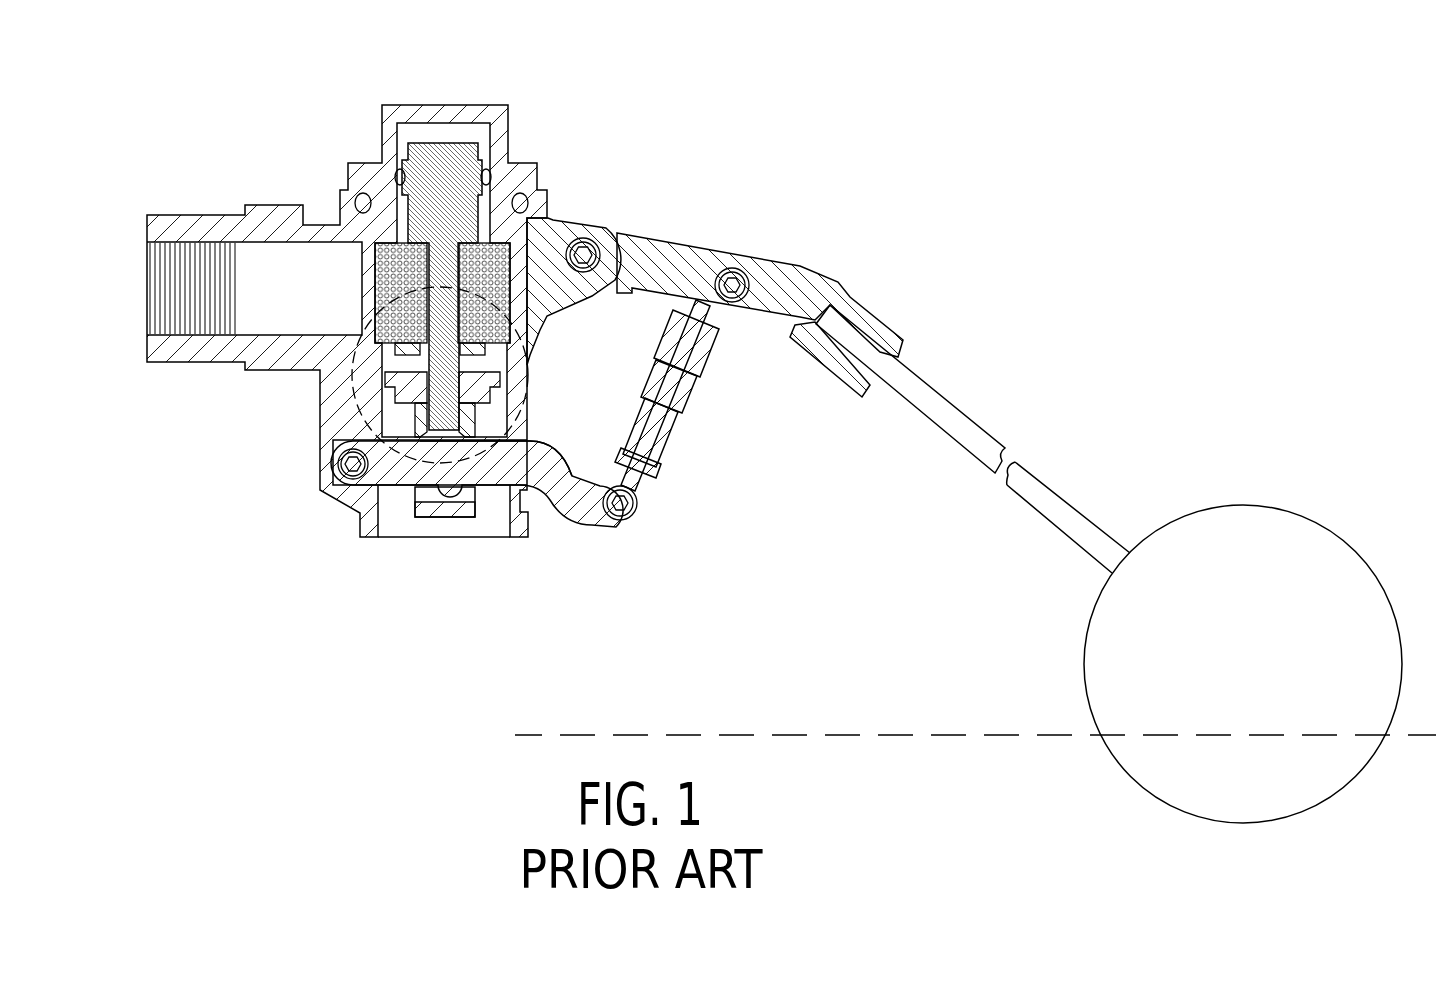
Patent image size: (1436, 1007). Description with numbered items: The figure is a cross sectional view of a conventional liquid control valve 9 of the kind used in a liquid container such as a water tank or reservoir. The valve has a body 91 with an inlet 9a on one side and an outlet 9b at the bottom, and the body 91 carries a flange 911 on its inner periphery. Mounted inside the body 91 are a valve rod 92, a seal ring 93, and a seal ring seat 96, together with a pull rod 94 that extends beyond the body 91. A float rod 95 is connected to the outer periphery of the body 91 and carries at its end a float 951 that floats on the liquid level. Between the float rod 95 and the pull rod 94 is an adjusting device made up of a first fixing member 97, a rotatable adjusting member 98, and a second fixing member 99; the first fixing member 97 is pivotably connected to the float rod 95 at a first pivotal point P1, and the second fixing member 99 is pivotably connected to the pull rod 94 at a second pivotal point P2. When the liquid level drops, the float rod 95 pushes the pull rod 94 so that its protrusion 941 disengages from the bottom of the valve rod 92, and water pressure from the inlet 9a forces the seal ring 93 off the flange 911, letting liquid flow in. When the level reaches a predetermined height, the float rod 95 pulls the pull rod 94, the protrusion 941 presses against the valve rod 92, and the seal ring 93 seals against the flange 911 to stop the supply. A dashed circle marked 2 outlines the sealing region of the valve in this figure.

The liquid control valve 9 is at (605, 58).
The inlet 9a is at (147, 255).
The outlet 9b is at (448, 540).
The body 91 is at (530, 168).
The flange 911 is at (387, 360).
The valve rod 92 is at (437, 150).
The seal ring 93 is at (383, 385).
The pull rod 94 is at (567, 502).
The protrusion 941 is at (495, 441).
The float rod 95 is at (806, 272).
The float 951 is at (1263, 520).
The seal ring seat 96 is at (380, 397).
The first fixing member 97 is at (735, 315).
The rotatable adjusting member 98 is at (700, 400).
The second fixing member 99 is at (648, 490).
The first pivotal point P1 is at (737, 275).
The second pivotal point P2 is at (630, 515).
The detail region 2 is at (410, 487).